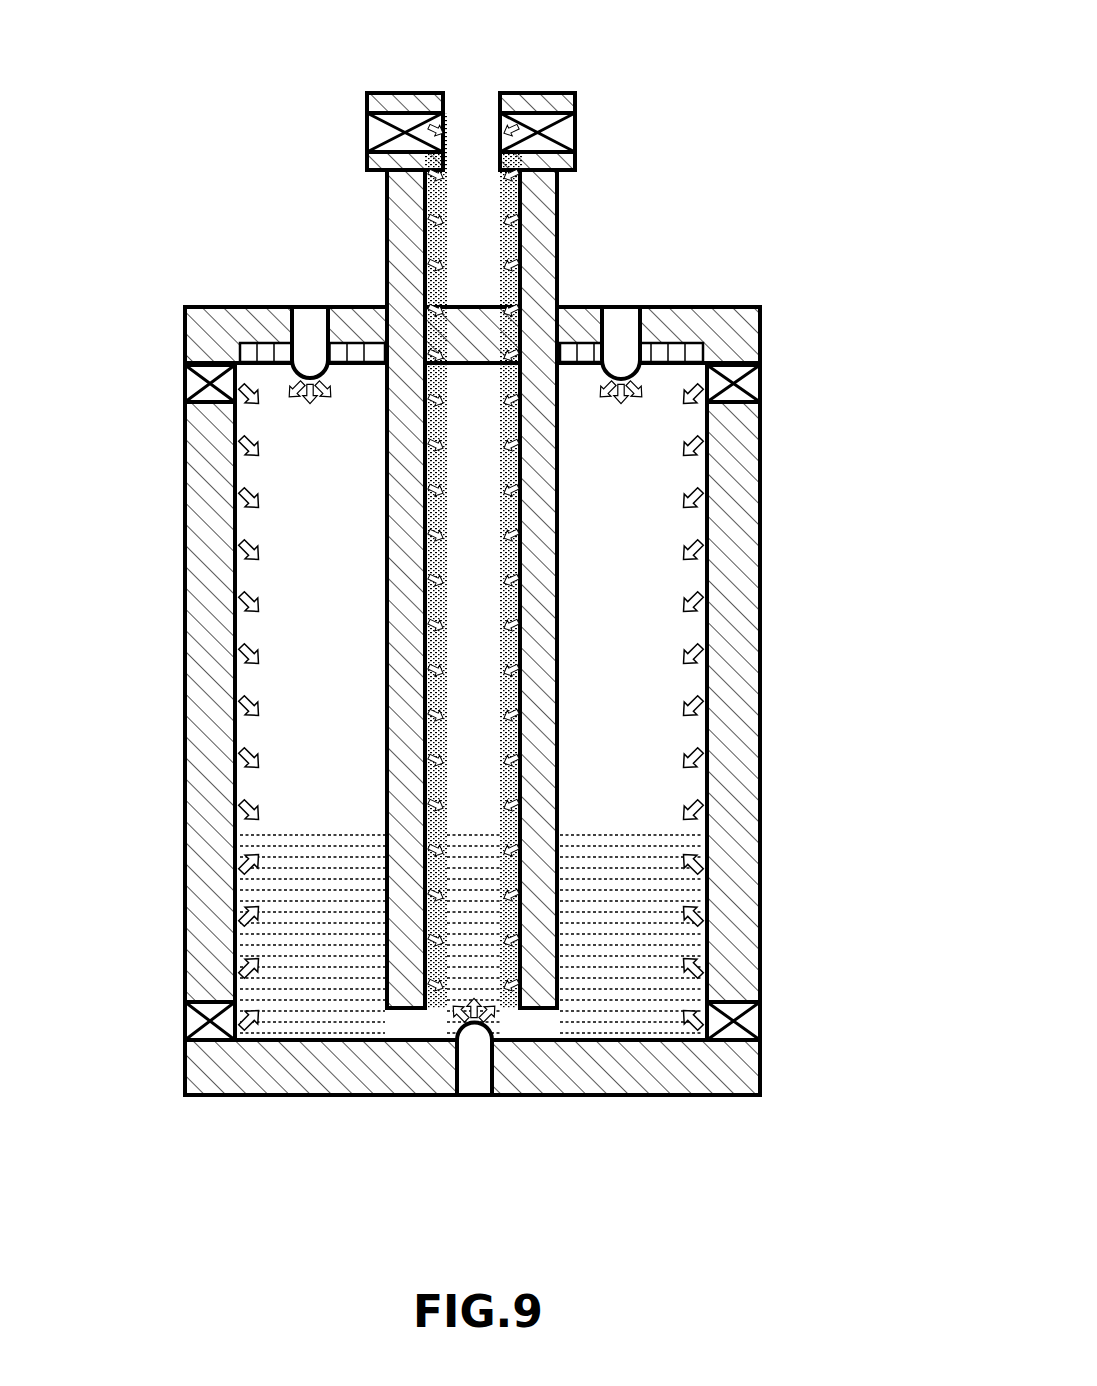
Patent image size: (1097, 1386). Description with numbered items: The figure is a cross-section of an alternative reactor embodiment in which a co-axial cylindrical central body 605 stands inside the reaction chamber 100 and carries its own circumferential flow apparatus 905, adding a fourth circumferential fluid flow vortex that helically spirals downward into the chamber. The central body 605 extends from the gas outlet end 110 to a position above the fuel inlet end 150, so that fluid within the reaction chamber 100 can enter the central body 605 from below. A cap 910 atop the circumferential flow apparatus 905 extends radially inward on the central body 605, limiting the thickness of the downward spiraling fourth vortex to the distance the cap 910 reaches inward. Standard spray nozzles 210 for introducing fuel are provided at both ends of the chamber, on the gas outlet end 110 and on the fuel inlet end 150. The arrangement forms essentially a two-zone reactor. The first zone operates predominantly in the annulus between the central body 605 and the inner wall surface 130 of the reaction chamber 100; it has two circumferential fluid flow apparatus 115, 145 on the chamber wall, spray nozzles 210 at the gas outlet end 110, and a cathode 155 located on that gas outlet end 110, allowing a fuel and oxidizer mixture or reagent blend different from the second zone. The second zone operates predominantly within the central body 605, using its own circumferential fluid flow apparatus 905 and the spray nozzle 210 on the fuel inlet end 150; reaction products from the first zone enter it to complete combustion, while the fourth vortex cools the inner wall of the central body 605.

The reaction chamber 100 is at (158, 290).
The gas outlet end 110 is at (731, 330).
The circumferential fluid flow apparatus 115 is at (743, 384).
The inner wall surface of the reaction chamber 130 is at (690, 722).
The circumferential fluid flow apparatus 145 is at (747, 1023).
The fuel inlet end 150 is at (660, 1070).
The cathode 155 is at (267, 352).
The standard spray nozzles 210 is at (624, 307).
The co-axial cylindrical central body 605 is at (403, 263).
The circumferential flow apparatus 905 is at (370, 132).
The cap 910 is at (563, 95).